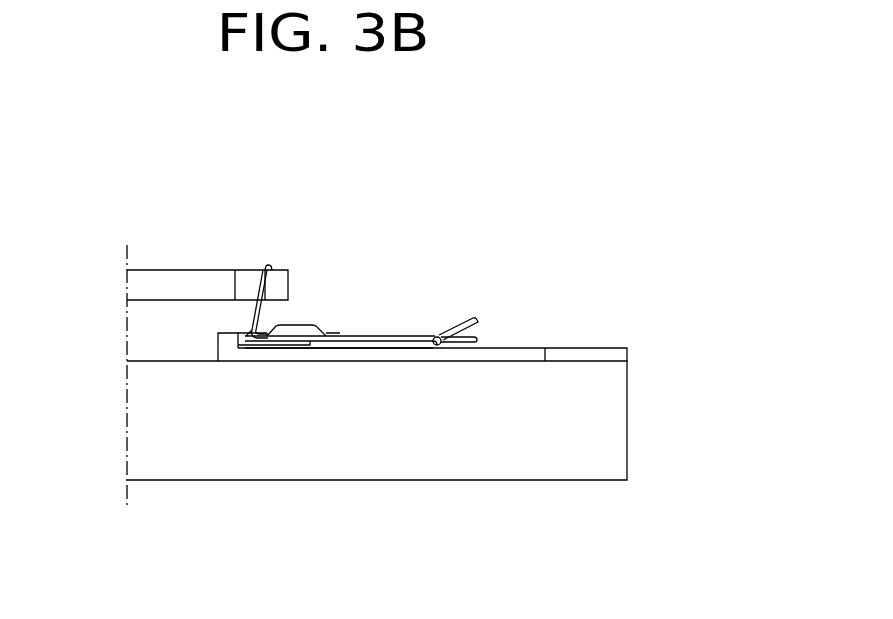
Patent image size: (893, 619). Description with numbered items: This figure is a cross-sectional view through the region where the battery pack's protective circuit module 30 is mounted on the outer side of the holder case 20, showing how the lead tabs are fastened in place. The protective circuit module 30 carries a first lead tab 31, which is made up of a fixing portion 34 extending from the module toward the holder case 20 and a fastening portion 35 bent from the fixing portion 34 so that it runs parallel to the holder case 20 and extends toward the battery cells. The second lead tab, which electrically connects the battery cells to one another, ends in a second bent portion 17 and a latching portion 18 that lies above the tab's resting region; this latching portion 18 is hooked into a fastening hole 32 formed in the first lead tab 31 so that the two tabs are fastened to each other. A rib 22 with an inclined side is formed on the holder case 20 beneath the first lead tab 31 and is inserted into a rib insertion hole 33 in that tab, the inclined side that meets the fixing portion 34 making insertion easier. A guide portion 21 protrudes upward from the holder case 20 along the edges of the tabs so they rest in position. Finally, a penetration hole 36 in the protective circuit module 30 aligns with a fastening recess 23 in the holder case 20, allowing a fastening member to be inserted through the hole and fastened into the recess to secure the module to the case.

The second bent portion 17 is at (478, 341).
The latching portion 18 is at (478, 320).
The holder case 20 is at (148, 434).
The guide portion 21 is at (372, 352).
The rib 22 is at (303, 352).
The fastening recess 23 is at (248, 333).
The protective circuit module 30 is at (135, 280).
The first lead tab 31 is at (341, 270).
The fastening hole 32 is at (435, 336).
The rib insertion hole 33 is at (330, 336).
The fixing portion 34 is at (270, 312).
The fastening portion 35 is at (392, 340).
The penetration hole 36 is at (253, 282).